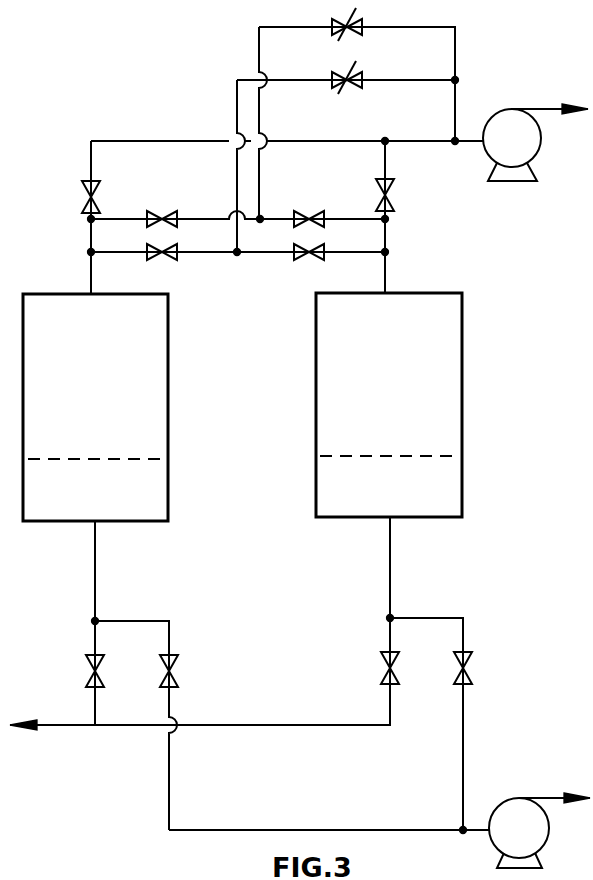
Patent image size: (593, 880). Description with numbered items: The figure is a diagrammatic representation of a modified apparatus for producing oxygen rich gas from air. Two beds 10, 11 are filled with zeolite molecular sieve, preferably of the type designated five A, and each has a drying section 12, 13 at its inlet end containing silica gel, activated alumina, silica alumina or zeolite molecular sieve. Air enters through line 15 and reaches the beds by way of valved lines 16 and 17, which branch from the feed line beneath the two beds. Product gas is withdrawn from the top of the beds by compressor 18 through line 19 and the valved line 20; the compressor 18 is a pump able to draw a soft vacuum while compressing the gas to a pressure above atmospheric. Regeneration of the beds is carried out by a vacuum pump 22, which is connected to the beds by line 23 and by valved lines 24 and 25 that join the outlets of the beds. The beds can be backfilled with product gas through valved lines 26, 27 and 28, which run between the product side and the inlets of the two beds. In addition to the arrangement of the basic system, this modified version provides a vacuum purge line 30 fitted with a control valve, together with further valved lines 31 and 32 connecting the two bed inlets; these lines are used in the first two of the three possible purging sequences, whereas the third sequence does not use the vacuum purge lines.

The bed 10 is at (95, 407).
The bed 11 is at (389, 405).
The drying section 12 is at (96, 481).
The drying section 13 is at (389, 478).
The line 15 is at (63, 733).
The valved line 16 is at (88, 640).
The valved line 17 is at (387, 638).
The compressor 18 is at (535, 142).
The line 19 is at (435, 143).
The valved line 20 is at (88, 237).
The vacuum pump 22 is at (539, 830).
The line 23 is at (408, 828).
The valved line 24 is at (172, 640).
The valved line 25 is at (466, 638).
The valved line 26 is at (300, 83).
The valved line 27 is at (205, 255).
The valved line 28 is at (357, 255).
The vacuum purge line 30 is at (400, 29).
The valved line 31 is at (193, 218).
The valved line 32 is at (276, 218).